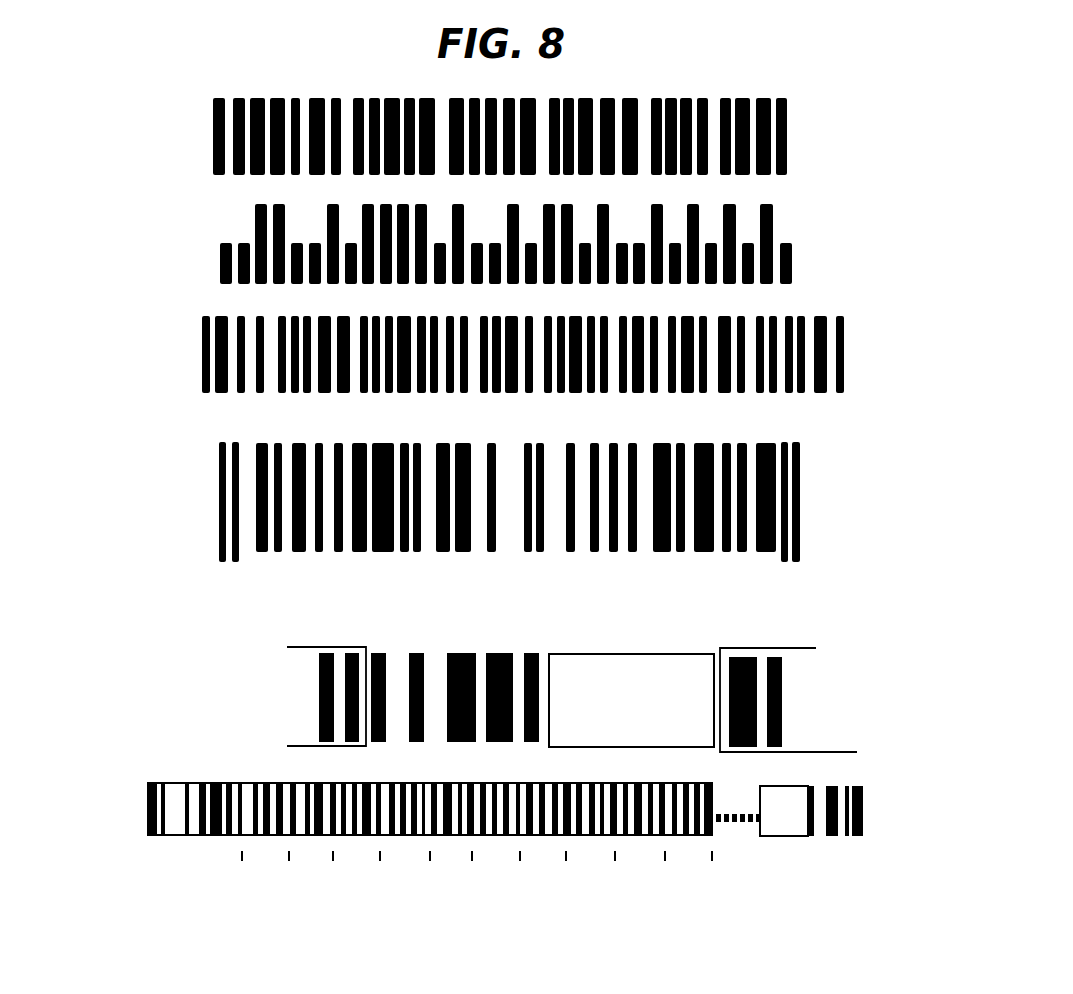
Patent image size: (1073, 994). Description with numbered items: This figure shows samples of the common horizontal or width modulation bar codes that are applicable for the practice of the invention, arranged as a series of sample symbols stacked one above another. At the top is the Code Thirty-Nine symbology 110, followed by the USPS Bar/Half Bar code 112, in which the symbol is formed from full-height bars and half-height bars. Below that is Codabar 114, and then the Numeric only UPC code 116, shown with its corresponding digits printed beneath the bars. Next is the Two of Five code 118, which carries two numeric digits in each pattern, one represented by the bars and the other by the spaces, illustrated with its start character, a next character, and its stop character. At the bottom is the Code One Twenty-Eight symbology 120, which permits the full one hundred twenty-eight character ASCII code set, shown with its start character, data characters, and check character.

The Code 39 110 is at (197, 151).
The USPS Bar/Half Bar code 112 is at (203, 265).
The Codabar 114 is at (190, 368).
The Numeric only UPC code 116 is at (181, 508).
The 2 of 5 code 118 is at (192, 676).
The Code 128 120 is at (176, 779).